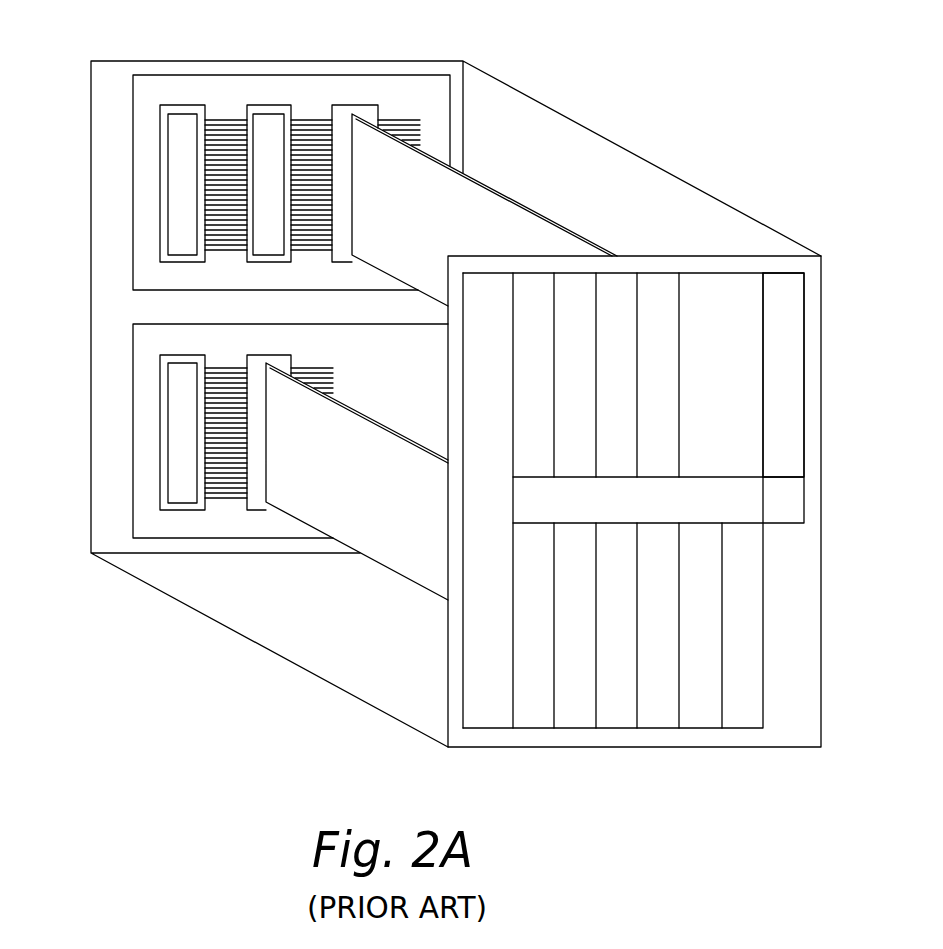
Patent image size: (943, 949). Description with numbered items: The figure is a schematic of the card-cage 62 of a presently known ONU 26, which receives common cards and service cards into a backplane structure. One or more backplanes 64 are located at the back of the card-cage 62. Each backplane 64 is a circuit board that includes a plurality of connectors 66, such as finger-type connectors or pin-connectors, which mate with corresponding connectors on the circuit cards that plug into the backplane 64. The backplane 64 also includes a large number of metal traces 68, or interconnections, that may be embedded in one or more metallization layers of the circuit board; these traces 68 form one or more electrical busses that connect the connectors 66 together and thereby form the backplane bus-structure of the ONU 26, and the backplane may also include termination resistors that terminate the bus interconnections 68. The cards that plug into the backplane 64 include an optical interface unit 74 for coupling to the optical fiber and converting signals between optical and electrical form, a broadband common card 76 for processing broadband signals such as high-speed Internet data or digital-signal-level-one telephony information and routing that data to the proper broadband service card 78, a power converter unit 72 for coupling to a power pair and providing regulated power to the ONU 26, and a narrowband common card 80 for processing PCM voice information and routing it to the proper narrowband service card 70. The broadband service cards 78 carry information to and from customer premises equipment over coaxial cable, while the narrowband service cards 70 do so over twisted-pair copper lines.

The ONU 26 is at (840, 622).
The card-cage 62 is at (237, 687).
The backplane 64 is at (147, 200).
The connectors 66 is at (178, 105).
The metal traces 68 is at (225, 122).
The narrowband service card 70 is at (693, 715).
The power converter unit 72 is at (483, 705).
The optical interface unit 74 is at (793, 302).
The broadband common card 76 is at (742, 452).
The broadband service card 78 is at (622, 468).
The narrowband common card 80 is at (537, 470).